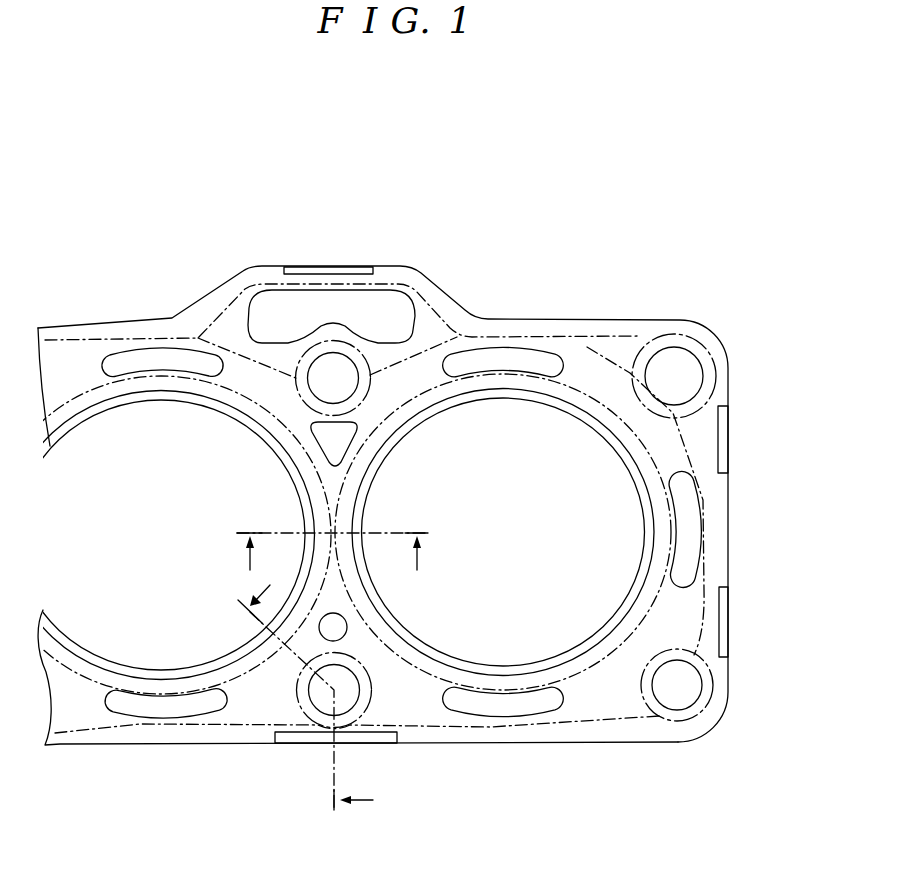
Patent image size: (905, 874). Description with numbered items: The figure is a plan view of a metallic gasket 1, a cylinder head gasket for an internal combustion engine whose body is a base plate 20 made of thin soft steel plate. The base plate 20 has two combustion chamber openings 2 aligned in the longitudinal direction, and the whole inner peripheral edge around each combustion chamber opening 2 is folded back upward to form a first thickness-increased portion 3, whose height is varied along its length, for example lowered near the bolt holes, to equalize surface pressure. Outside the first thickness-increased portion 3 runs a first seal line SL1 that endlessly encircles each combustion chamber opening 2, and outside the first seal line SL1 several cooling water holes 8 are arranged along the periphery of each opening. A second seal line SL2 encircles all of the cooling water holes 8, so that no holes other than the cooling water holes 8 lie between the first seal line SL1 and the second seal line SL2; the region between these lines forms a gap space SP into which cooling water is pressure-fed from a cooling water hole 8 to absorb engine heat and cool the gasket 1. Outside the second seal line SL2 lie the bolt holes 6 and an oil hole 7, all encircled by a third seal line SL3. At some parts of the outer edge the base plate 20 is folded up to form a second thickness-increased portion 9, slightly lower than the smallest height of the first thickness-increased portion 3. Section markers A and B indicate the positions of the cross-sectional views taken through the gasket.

The metallic gasket 1 is at (622, 320).
The combustion chamber opening 2 is at (545, 664).
The first thickness-increased portion 3 is at (580, 652).
The bolt hole 6 is at (319, 360).
The oil hole 7 is at (390, 298).
The cooling water hole 8 is at (153, 353).
The second thickness-increased portion 9 is at (337, 265).
The base plate 20 is at (430, 745).
The first seal line SL1 is at (531, 345).
The second seal line SL2 is at (588, 345).
The third seal line SL3 is at (430, 310).
The gap space SP is at (690, 451).
The section line A- A is at (334, 551).
The section line B- B is at (298, 699).